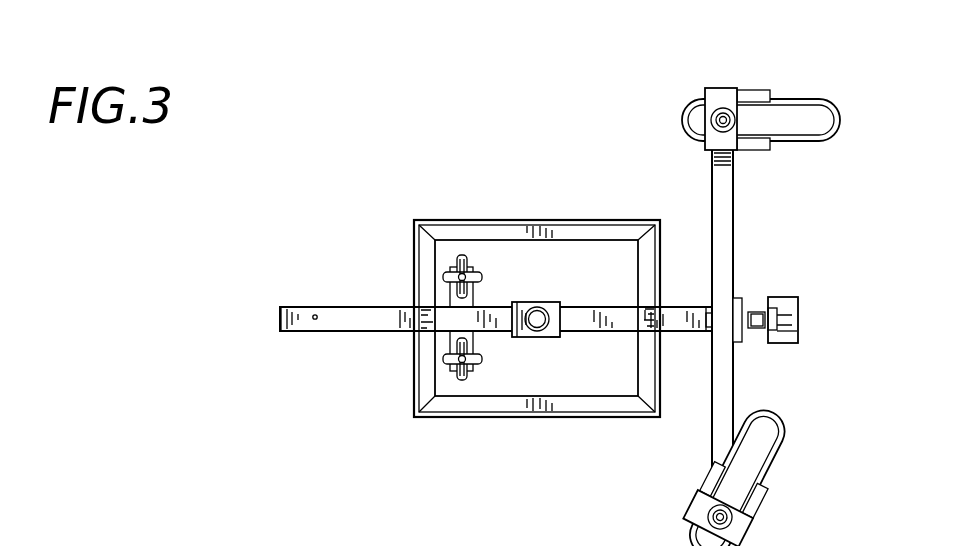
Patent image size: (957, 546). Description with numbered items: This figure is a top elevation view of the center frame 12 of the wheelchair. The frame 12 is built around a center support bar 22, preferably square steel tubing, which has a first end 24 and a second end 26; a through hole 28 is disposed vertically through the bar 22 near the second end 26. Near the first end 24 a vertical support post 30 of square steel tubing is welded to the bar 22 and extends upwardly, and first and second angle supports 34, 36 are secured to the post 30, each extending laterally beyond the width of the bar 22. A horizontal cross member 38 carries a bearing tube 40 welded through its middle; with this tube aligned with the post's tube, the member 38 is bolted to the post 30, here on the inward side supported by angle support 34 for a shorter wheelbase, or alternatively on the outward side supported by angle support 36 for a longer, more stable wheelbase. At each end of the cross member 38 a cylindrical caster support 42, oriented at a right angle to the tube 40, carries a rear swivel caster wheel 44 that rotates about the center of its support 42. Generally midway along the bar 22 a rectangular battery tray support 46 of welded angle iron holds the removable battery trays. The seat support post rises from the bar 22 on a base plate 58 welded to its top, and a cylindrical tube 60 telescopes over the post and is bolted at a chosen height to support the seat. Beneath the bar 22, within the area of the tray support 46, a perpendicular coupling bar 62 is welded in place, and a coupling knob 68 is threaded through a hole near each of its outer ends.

The frame 12 is at (556, 307).
The center support bar 22 is at (292, 306).
The first end 24 is at (798, 310).
The second end 26 is at (280, 320).
The through hole 28 is at (315, 315).
The vertical support post 30 is at (757, 328).
The first angle support 34 is at (740, 298).
The second angle support 36 is at (790, 343).
The horizontal cross member 38 is at (735, 165).
The bearing tube 40 is at (690, 309).
The cylindrical caster support 42 is at (712, 118).
The rear swivel caster wheel 44 is at (840, 121).
The battery tray support 46 is at (505, 220).
The base plate 58 is at (548, 302).
The cylindrical tube 60 is at (563, 338).
The coupling bar 62 is at (472, 255).
The coupling knob 68 is at (482, 275).